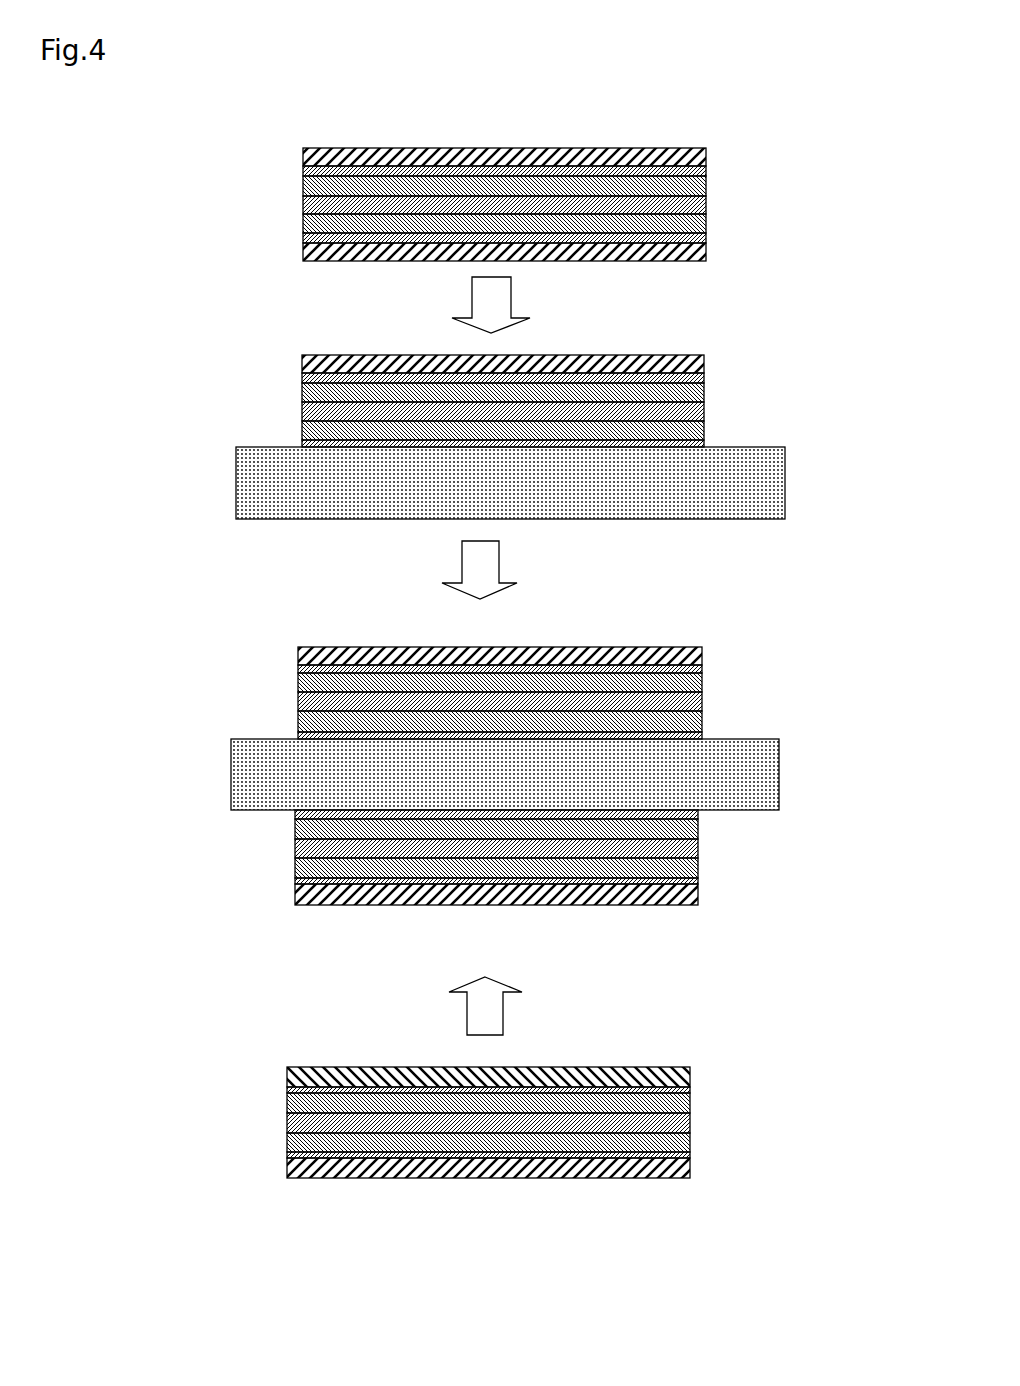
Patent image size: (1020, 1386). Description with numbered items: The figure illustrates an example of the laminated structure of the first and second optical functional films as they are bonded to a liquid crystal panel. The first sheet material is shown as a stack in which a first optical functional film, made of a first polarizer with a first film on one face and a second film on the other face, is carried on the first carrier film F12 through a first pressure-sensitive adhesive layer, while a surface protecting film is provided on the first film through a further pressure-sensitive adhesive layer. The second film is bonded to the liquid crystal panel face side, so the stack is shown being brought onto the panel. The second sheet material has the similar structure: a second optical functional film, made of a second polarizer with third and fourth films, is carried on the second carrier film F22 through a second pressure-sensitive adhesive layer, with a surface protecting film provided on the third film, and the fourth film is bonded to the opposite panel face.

The first carrier film F12 is at (706, 252).
The second carrier film F22 is at (690, 1075).